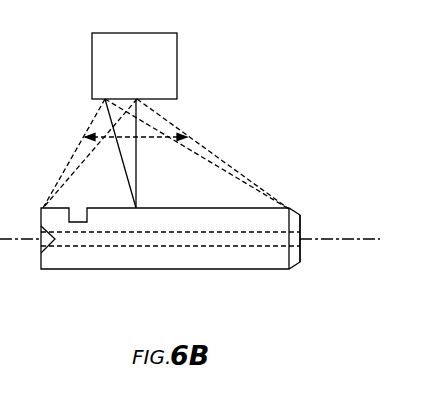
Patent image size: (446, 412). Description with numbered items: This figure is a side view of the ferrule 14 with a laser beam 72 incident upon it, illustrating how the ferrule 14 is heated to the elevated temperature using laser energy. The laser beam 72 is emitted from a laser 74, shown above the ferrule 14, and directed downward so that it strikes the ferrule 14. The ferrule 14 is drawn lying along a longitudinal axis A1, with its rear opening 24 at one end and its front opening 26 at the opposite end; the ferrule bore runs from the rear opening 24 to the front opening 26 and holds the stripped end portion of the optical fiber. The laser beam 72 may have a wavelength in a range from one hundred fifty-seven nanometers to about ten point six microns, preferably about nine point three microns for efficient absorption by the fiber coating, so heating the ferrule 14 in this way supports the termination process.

The laser 74 is at (134, 66).
The laser beam 72 is at (137, 160).
The ferrule 14 is at (253, 232).
The rear opening 24 is at (60, 246).
The front opening 26 is at (302, 241).
The longitudinal axis A1 is at (203, 242).